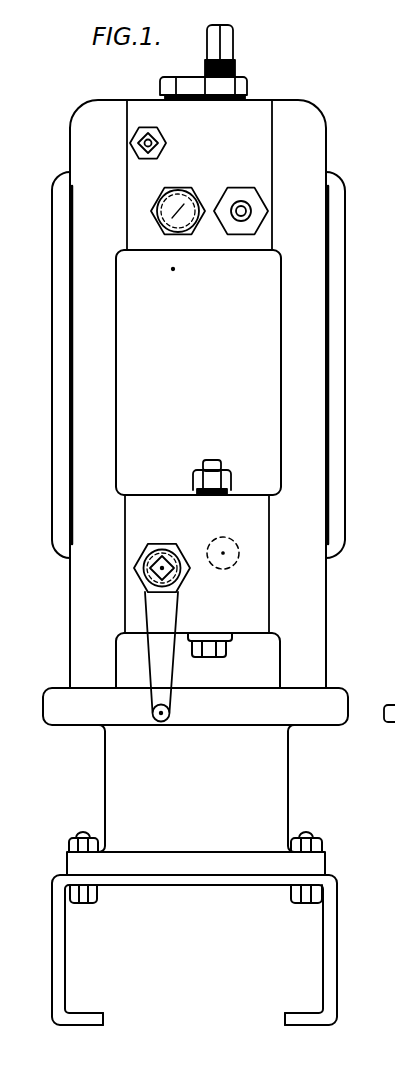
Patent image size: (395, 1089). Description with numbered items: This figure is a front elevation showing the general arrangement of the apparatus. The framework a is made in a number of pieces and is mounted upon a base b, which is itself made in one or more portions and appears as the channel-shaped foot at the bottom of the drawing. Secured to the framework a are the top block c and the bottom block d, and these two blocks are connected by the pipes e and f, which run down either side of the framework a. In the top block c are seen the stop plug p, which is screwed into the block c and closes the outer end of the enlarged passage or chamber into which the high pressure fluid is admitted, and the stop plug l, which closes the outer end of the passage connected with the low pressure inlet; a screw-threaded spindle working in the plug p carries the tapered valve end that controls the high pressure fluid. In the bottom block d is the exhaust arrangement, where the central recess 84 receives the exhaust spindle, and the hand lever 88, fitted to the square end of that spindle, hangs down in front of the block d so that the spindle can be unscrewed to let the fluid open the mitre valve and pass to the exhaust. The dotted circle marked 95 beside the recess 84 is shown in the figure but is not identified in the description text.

The framework a is at (303, 125).
The base b is at (65, 952).
The top block c is at (199, 175).
The bottom block d is at (229, 561).
The pipe e is at (337, 348).
The pipe f is at (62, 378).
The stop plug l is at (236, 200).
The stop plug p is at (165, 139).
The central recess 84 is at (166, 548).
The hand lever 88 is at (163, 622).
The hidden opening 95 is at (239, 540).